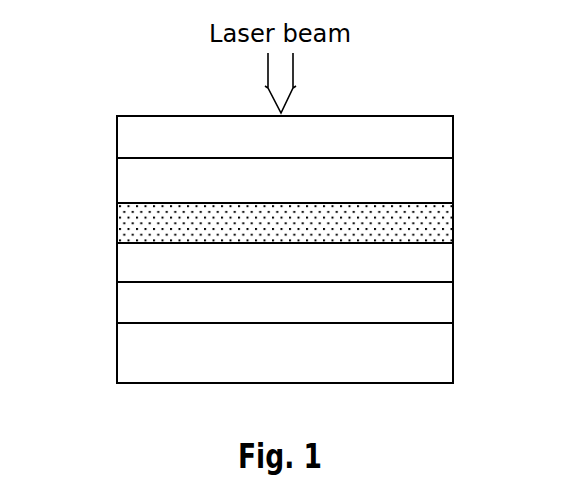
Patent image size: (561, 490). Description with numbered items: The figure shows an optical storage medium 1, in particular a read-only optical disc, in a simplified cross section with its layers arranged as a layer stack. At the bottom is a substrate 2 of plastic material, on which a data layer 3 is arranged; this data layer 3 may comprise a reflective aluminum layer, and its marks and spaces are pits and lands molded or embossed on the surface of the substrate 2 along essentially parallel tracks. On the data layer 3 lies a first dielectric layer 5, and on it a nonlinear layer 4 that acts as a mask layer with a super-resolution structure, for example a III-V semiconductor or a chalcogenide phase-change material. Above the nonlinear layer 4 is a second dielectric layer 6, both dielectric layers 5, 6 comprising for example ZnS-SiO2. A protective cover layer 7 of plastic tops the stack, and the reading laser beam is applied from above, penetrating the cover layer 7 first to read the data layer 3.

The optical storage medium 1 is at (172, 383).
The substrate 2 is at (442, 361).
The data layer 3 is at (125, 312).
The nonlinear layer 4 is at (125, 218).
The first dielectric layer 5 is at (442, 263).
The second dielectric layer 6 is at (442, 182).
The cover layer 7 is at (125, 132).